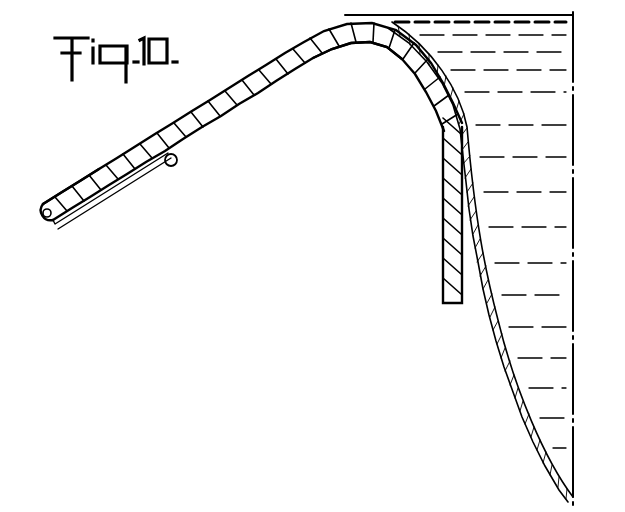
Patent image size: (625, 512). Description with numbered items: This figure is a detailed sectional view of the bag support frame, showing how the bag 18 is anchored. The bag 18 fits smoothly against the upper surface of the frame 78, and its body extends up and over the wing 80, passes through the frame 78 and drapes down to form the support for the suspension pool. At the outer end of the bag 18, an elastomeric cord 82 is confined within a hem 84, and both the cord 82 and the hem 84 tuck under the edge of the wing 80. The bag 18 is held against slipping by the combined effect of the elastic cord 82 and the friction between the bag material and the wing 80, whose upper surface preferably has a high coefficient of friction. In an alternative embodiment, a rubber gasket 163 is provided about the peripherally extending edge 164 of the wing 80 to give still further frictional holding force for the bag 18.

The bag 18 is at (245, 77).
The wing 80 is at (325, 46).
The frame 78 is at (443, 216).
The elastomeric cord 82 is at (172, 166).
The hem 84 is at (152, 178).
The rubber gasket 163 is at (47, 230).
The peripherally extending edge 164 is at (76, 189).